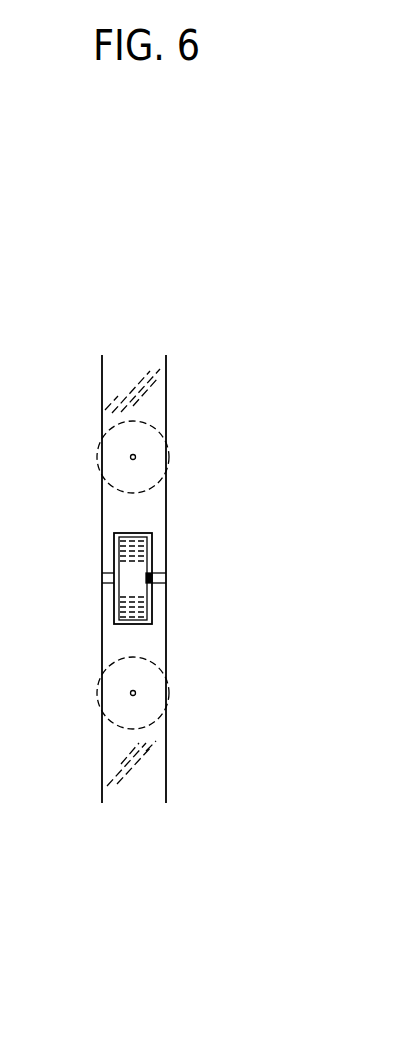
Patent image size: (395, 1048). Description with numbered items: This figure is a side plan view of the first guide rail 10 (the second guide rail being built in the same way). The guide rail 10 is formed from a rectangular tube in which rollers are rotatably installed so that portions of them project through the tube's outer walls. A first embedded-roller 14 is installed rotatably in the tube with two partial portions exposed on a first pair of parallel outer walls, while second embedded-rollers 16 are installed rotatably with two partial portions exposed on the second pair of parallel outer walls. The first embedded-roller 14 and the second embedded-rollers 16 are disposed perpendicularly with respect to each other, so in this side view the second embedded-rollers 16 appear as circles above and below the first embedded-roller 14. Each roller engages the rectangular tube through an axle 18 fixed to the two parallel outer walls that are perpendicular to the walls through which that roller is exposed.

The first guide rail 10 is at (188, 343).
The first embedded-rollers 14 is at (126, 565).
The second embedded-rollers 16 is at (168, 453).
The axle 18 is at (136, 459).